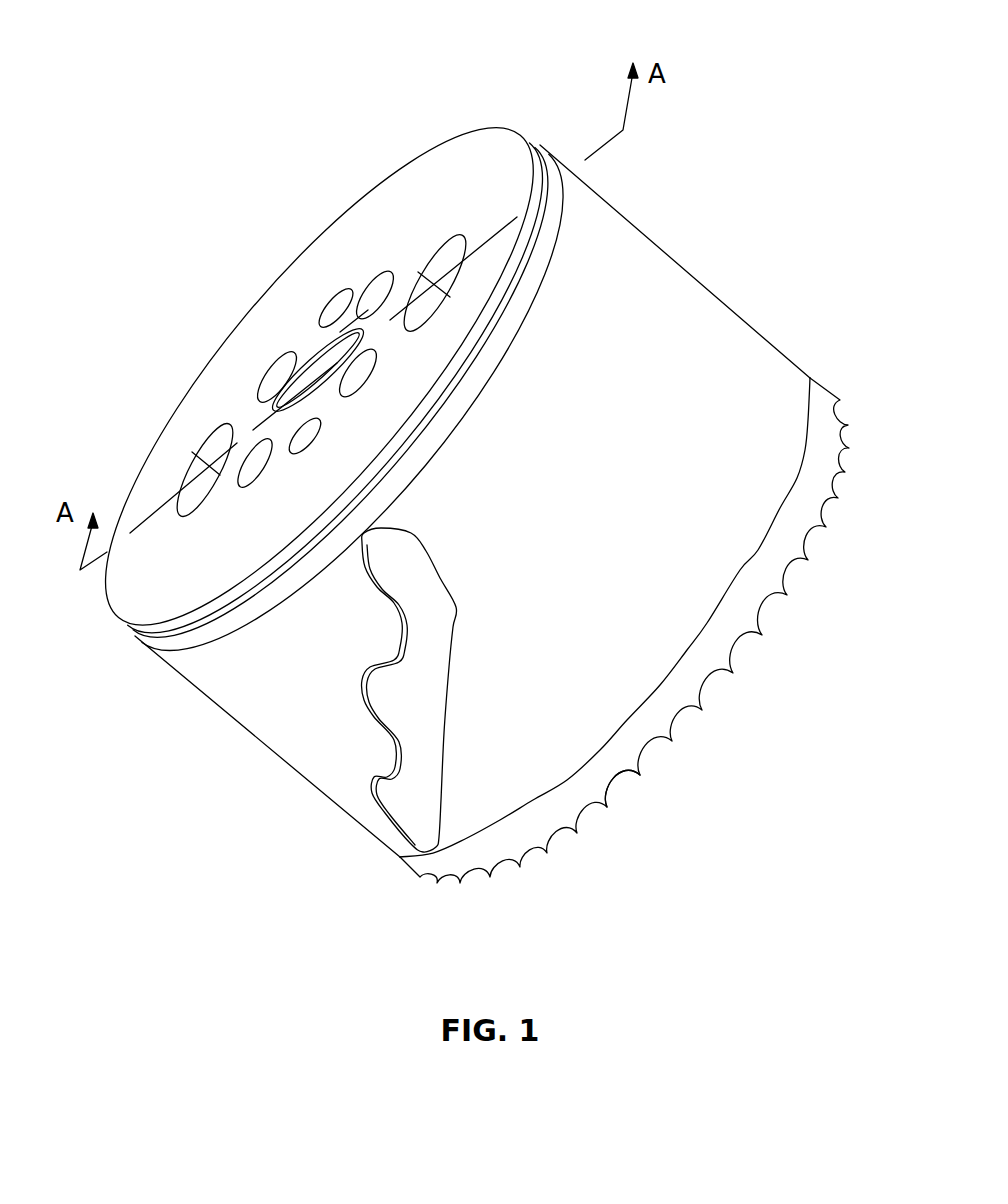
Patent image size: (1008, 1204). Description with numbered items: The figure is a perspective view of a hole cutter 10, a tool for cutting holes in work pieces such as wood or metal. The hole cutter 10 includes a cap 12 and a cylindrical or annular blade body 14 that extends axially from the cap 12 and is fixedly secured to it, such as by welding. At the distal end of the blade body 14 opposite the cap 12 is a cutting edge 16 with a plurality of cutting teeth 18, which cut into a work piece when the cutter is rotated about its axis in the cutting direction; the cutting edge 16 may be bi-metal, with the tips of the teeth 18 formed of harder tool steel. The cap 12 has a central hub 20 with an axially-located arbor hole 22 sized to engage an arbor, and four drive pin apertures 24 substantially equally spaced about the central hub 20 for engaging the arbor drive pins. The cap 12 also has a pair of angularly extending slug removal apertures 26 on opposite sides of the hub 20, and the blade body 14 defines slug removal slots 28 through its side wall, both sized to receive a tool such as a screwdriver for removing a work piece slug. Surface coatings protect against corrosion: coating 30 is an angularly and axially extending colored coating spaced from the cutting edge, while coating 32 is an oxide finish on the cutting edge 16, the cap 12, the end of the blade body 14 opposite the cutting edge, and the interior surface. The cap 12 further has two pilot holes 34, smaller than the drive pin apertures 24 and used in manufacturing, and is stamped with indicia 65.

The hole cutter 10 is at (612, 198).
The cap 12 is at (430, 150).
The blade body 14 is at (693, 277).
The cutting edge 16 is at (767, 643).
The cutting teeth 18 is at (638, 776).
The central hub 20 is at (270, 410).
The arbor hole 22 is at (340, 335).
The drive pin apertures 24 is at (366, 392).
The slug removal apertures 26 is at (185, 522).
The slug removal slots 28 is at (430, 707).
The coating 30 is at (290, 743).
The coating 32 is at (150, 643).
The pilot holes 34 is at (340, 318).
The indicia 65 is at (473, 187).